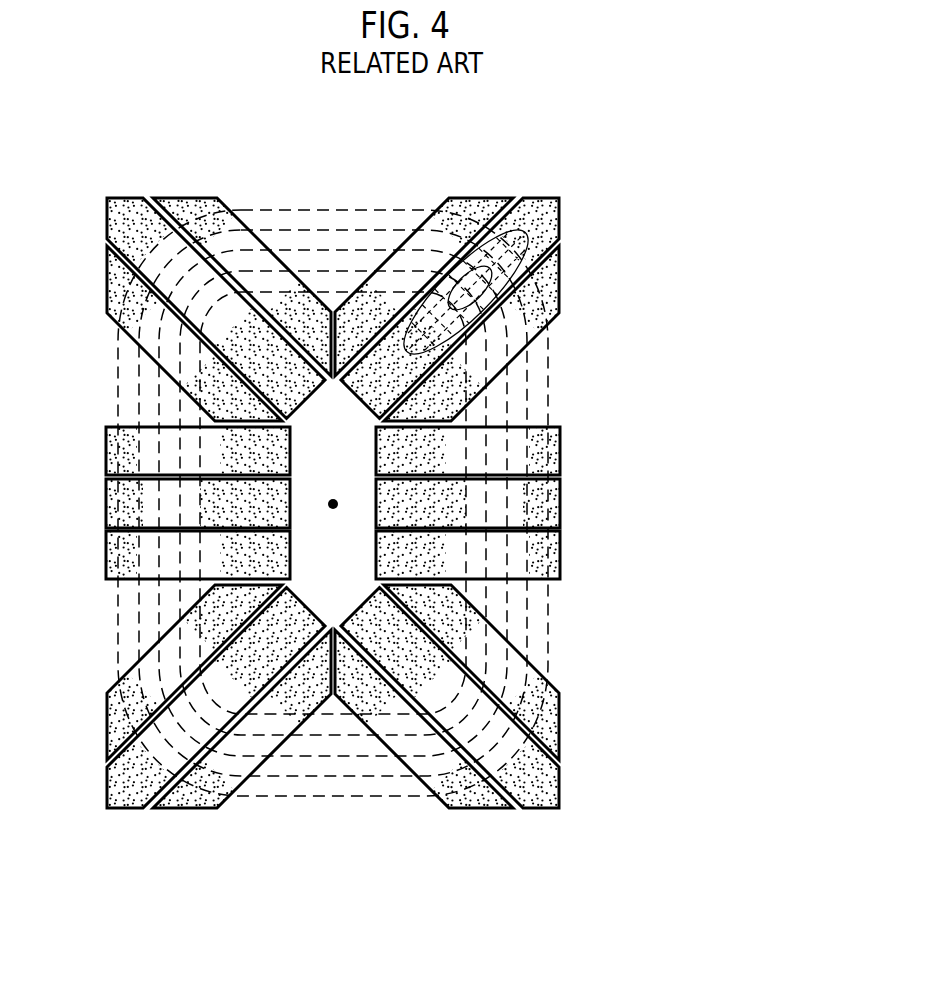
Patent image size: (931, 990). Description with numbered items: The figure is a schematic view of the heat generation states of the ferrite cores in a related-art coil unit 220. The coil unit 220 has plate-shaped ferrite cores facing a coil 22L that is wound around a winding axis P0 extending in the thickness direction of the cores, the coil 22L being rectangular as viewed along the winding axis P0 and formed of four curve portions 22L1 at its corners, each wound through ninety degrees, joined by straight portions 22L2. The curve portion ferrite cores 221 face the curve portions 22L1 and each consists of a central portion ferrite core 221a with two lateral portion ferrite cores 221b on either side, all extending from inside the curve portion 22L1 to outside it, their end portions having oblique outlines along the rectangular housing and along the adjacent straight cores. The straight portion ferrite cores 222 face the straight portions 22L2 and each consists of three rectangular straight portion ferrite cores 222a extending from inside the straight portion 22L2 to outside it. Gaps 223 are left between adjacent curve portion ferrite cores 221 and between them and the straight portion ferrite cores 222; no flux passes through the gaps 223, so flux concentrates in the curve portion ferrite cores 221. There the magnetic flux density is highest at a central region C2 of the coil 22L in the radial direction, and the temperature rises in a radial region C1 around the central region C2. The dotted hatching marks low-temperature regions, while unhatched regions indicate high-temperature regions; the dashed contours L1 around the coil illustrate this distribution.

The coil unit 220 is at (152, 866).
The curve portion ferrite core 221 is at (423, 494).
The central portion ferrite core 221a is at (547, 220).
The lateral portion ferrite core 221b is at (473, 208).
The straight portion ferrite core 222 is at (406, 503).
The straight portion ferrite core 222a is at (550, 452).
The gap 223 is at (335, 242).
The coil 22L is at (709, 459).
The curve portion 22L1 is at (563, 310).
The straight portion 22L2 is at (550, 608).
The radial region C1 is at (406, 349).
The central region C2 is at (477, 268).
The equipotential line L1 is at (603, 153).
The winding axis P0 is at (328, 504).